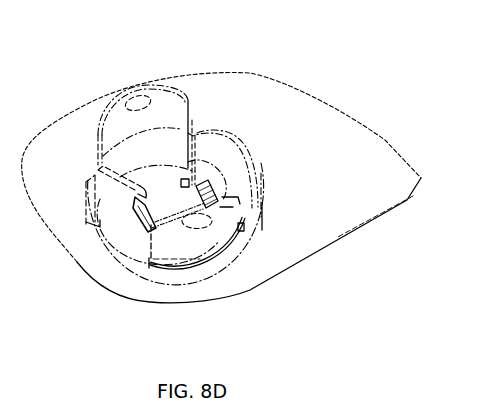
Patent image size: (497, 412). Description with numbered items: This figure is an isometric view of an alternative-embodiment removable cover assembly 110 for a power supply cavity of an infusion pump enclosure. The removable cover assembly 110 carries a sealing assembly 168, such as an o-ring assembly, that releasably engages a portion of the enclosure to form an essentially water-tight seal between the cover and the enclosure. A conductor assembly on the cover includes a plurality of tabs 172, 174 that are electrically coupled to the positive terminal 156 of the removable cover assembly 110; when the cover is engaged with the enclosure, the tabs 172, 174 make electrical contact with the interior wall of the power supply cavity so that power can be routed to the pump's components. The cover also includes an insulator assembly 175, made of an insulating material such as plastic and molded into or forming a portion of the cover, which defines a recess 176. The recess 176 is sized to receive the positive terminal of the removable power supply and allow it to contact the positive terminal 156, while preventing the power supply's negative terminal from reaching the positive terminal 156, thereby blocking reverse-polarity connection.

The removable cover assembly 110 is at (328, 113).
The sealing assembly 168 is at (110, 261).
The tab 172 is at (168, 105).
The tab 174 is at (243, 228).
The insulator assembly 175 is at (107, 213).
The recess 176 is at (163, 183).
The positive terminal 156 is at (155, 205).